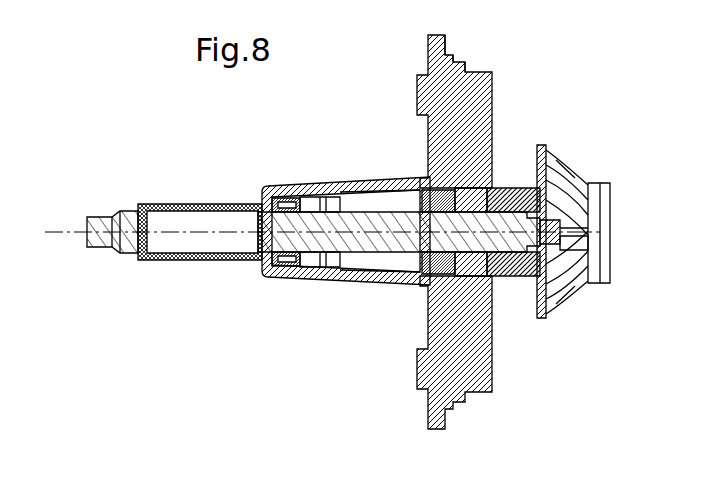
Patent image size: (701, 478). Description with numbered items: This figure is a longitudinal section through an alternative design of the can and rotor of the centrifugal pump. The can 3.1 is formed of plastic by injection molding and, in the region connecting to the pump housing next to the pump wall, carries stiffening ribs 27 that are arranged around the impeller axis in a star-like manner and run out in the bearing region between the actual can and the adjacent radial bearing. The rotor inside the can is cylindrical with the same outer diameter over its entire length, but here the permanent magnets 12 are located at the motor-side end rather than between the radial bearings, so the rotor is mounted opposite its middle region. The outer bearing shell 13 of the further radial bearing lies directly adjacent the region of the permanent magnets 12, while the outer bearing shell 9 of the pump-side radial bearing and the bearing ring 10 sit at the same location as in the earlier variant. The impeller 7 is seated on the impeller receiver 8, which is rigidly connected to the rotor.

The impeller 7 is at (600, 175).
The impeller receiver 8 is at (522, 188).
The outer stationary bearing shell 9 is at (493, 172).
The bearing shell 10 is at (405, 178).
The permanent magnets 12 is at (173, 258).
The outer bearing shell 13 is at (272, 266).
The stiffening ribs 27 is at (360, 283).
The can 3.1 is at (308, 178).